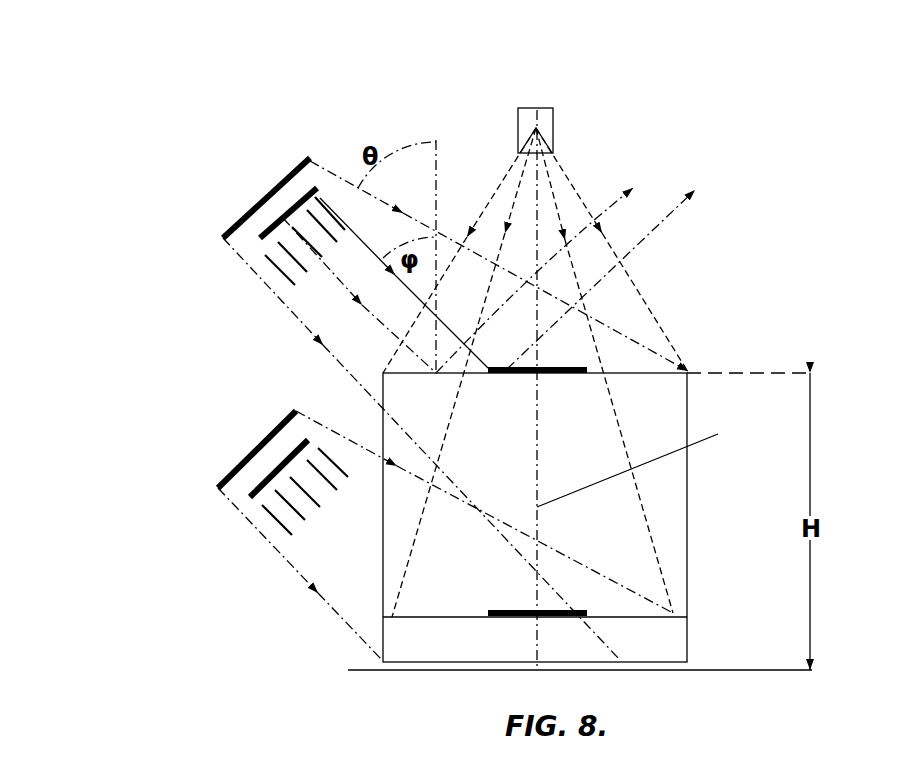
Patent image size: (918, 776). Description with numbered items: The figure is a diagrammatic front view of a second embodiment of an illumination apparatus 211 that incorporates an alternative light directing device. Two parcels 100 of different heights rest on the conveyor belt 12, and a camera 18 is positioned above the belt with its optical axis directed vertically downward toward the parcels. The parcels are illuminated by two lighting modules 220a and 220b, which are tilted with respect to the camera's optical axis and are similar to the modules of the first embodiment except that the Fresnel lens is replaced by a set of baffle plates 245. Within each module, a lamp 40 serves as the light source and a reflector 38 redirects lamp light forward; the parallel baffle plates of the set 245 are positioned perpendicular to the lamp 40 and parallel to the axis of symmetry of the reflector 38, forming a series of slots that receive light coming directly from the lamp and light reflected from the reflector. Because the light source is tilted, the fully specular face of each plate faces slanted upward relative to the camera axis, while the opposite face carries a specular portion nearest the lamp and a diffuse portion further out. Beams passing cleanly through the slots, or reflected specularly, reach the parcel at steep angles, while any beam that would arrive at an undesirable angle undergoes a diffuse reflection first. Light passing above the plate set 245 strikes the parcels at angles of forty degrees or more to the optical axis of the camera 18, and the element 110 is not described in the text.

The illumination apparatus 211 is at (225, 108).
The lighting module 220a is at (208, 219).
The lighting module 220b is at (184, 467).
The reflector 38 is at (252, 218).
The lamp 40 is at (297, 203).
The set of baffle plates 245 is at (275, 274).
The camera 18 is at (553, 130).
The test strip / sample region 110 is at (570, 372).
The parcels 100 is at (662, 635).
The conveyor belt 12 is at (368, 670).